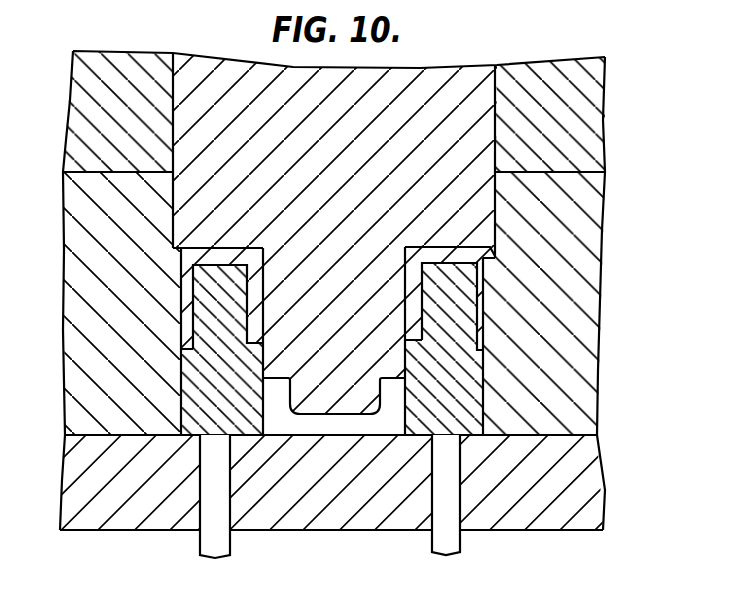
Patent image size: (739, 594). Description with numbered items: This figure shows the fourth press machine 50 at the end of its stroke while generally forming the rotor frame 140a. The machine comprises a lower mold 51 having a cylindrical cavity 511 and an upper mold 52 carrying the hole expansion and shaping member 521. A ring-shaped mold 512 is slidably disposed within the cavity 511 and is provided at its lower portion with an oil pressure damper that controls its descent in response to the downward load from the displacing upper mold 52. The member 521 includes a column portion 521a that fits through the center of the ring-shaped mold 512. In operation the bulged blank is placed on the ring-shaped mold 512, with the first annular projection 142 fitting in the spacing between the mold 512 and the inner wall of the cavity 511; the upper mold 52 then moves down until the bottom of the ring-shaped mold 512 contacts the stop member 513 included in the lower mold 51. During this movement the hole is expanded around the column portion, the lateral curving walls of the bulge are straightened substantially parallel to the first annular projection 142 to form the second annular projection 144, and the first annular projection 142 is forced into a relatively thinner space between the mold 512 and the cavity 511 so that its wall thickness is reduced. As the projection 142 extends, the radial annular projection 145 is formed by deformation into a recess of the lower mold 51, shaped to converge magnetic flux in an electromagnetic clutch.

The fourth press machine 50 is at (618, 128).
The lower mold 51 is at (82, 244).
The upper mold 52 is at (87, 99).
The hole expansion and shaping member 521 is at (448, 82).
The column portion 521a is at (398, 370).
The cylindrical cavity 511 is at (480, 413).
The ring-shaped mold 512 is at (363, 465).
The stop member 513 is at (402, 518).
The rotor frame 140a is at (458, 248).
The radial annular projection 145 is at (480, 257).
The second annular projection 144 is at (415, 302).
The first annular projection 142 is at (480, 332).